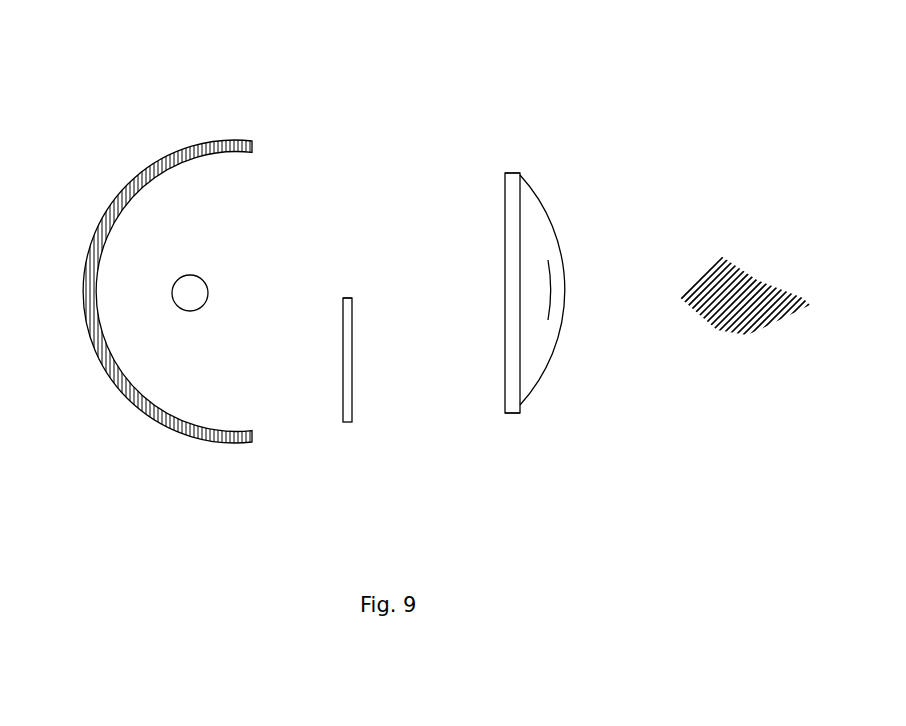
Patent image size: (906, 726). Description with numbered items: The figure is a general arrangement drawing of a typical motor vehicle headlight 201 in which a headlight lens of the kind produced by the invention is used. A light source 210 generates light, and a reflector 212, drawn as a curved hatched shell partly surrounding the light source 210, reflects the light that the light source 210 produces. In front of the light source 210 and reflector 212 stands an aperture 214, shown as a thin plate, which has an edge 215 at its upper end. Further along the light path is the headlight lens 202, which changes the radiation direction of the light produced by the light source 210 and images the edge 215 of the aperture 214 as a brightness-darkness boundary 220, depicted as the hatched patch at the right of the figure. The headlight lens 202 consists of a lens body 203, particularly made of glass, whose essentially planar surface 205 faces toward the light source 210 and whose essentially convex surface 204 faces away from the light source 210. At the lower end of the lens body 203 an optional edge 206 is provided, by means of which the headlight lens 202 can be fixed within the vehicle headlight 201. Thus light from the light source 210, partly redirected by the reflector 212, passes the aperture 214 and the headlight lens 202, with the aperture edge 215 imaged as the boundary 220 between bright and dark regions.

The motor vehicle headlight 201 is at (484, 82).
The headlight lens 202 is at (519, 173).
The lens body 203 is at (533, 255).
The convex surface 204 is at (558, 330).
The planar surface 205 is at (504, 193).
The edge 206 is at (511, 398).
The light source 210 is at (190, 293).
The reflector 212 is at (185, 163).
The aperture 214 is at (348, 395).
The edge of the aperture 215 is at (348, 300).
The brightness-darkness boundary 220 is at (730, 261).